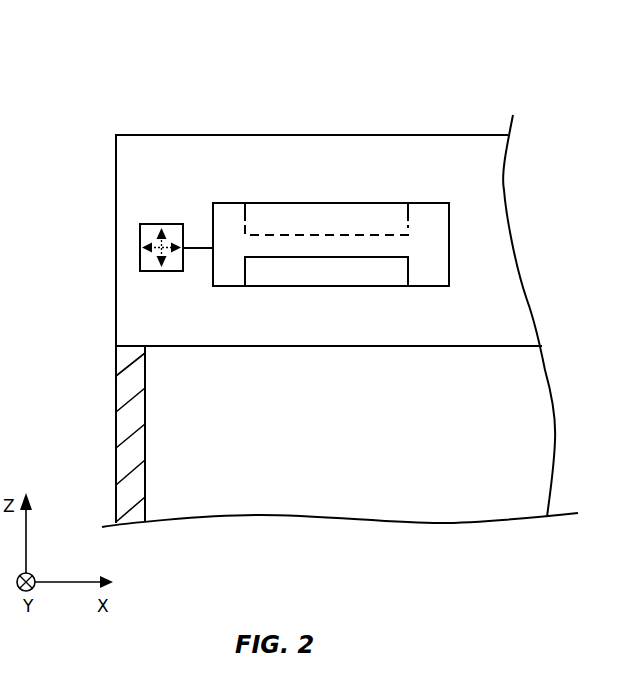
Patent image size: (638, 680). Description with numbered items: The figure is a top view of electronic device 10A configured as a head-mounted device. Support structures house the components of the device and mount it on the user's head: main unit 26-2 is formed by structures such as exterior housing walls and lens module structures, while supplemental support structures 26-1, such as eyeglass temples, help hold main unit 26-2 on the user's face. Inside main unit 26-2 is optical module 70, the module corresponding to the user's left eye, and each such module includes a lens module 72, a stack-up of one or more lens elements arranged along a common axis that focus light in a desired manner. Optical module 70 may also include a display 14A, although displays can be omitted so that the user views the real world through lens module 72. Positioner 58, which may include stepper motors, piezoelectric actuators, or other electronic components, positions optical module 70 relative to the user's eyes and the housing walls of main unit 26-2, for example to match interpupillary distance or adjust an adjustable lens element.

The electronic device 10A is at (157, 75).
The display 14A is at (332, 210).
The main unit 26-2 is at (116, 177).
The supplemental support structures 26-1 is at (116, 427).
The positioner 58 is at (160, 224).
The optical module 70 is at (449, 243).
The lens module 72 is at (336, 268).